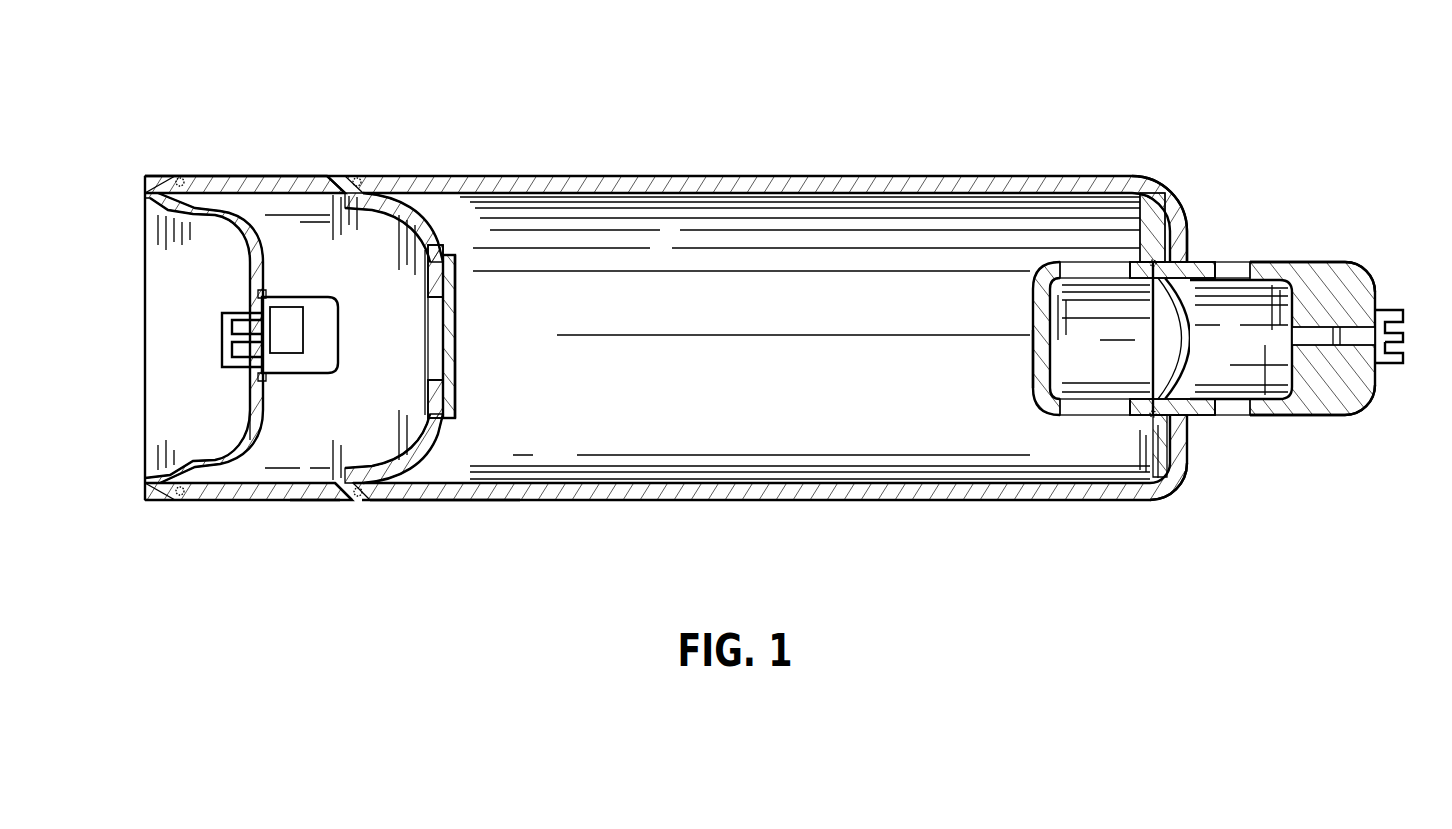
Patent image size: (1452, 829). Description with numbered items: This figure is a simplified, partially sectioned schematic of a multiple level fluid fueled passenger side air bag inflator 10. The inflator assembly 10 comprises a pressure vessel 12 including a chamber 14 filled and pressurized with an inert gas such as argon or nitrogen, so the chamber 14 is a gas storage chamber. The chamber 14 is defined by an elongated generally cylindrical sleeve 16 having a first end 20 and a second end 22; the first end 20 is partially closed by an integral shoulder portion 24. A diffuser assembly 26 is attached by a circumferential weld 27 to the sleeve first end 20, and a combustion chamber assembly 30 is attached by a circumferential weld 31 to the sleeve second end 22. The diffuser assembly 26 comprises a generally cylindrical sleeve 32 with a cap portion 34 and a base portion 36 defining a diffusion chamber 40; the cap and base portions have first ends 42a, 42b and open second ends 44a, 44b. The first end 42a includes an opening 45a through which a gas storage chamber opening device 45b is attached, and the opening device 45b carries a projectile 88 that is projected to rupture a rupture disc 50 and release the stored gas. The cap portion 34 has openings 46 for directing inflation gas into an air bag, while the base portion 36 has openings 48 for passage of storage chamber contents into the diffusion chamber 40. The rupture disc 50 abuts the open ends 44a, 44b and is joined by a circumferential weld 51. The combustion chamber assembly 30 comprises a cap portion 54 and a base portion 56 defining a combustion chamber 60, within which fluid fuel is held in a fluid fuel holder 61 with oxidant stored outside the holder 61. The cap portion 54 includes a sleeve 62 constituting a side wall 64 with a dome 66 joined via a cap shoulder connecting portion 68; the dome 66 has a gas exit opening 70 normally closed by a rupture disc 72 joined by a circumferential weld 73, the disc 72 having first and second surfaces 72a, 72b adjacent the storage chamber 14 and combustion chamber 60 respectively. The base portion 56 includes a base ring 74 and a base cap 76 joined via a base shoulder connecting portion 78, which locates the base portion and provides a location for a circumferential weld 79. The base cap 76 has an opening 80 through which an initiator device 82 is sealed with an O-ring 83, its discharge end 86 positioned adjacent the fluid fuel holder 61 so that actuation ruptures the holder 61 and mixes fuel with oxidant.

The air bag inflator 10 is at (766, 146).
The pressure vessel 12 is at (659, 178).
The chamber 14 is at (573, 440).
The sleeve 16 is at (950, 178).
The first end 20 is at (1192, 228).
The second end 22 is at (407, 499).
The shoulder portion 24 is at (1183, 450).
The diffuser assembly 26 is at (1303, 386).
The circumferential weld 27 is at (1193, 262).
The combustion chamber assembly 30 is at (275, 176).
The circumferential weld 31 is at (355, 176).
The sleeve 32 is at (1190, 227).
The cap portion 34 is at (1335, 416).
The base portion 36 is at (1040, 320).
The diffusion chamber 40 is at (1260, 360).
The first end 42a is at (1367, 410).
The first end 42b is at (1040, 370).
The open second end 44a is at (1153, 478).
The open second end 44b is at (1128, 418).
The opening 45a is at (1350, 322).
The gas storage chamber opening device 45b is at (1370, 386).
The openings 46 is at (1247, 262).
The openings 48 is at (1103, 262).
The rupture disc 50 is at (1183, 325).
The circumferential weld 51 is at (1153, 258).
The cap portion 54 is at (310, 500).
The base portion 56 is at (233, 498).
The combustion chamber 60 is at (338, 444).
The fluid fuel holder 61 is at (292, 297).
The sleeve 62 is at (218, 178).
The side wall 64 is at (273, 500).
The dome 66 is at (440, 443).
The cap shoulder connecting portion 68 is at (360, 500).
The gas exit opening 70 is at (433, 310).
The rupture disc 72 is at (450, 267).
The first surface 72a is at (455, 350).
The second surface 72b is at (443, 333).
The circumferential weld 73 is at (447, 253).
The base ring 74 is at (148, 180).
The base cap 76 is at (250, 434).
The base shoulder connecting portion 78 is at (178, 212).
The circumferential weld 79 is at (175, 500).
The opening 80 is at (253, 378).
The initiator device 82 is at (247, 337).
The O-ring 83 is at (255, 306).
The discharge end 86 is at (305, 330).
The projectile 88 is at (1333, 362).